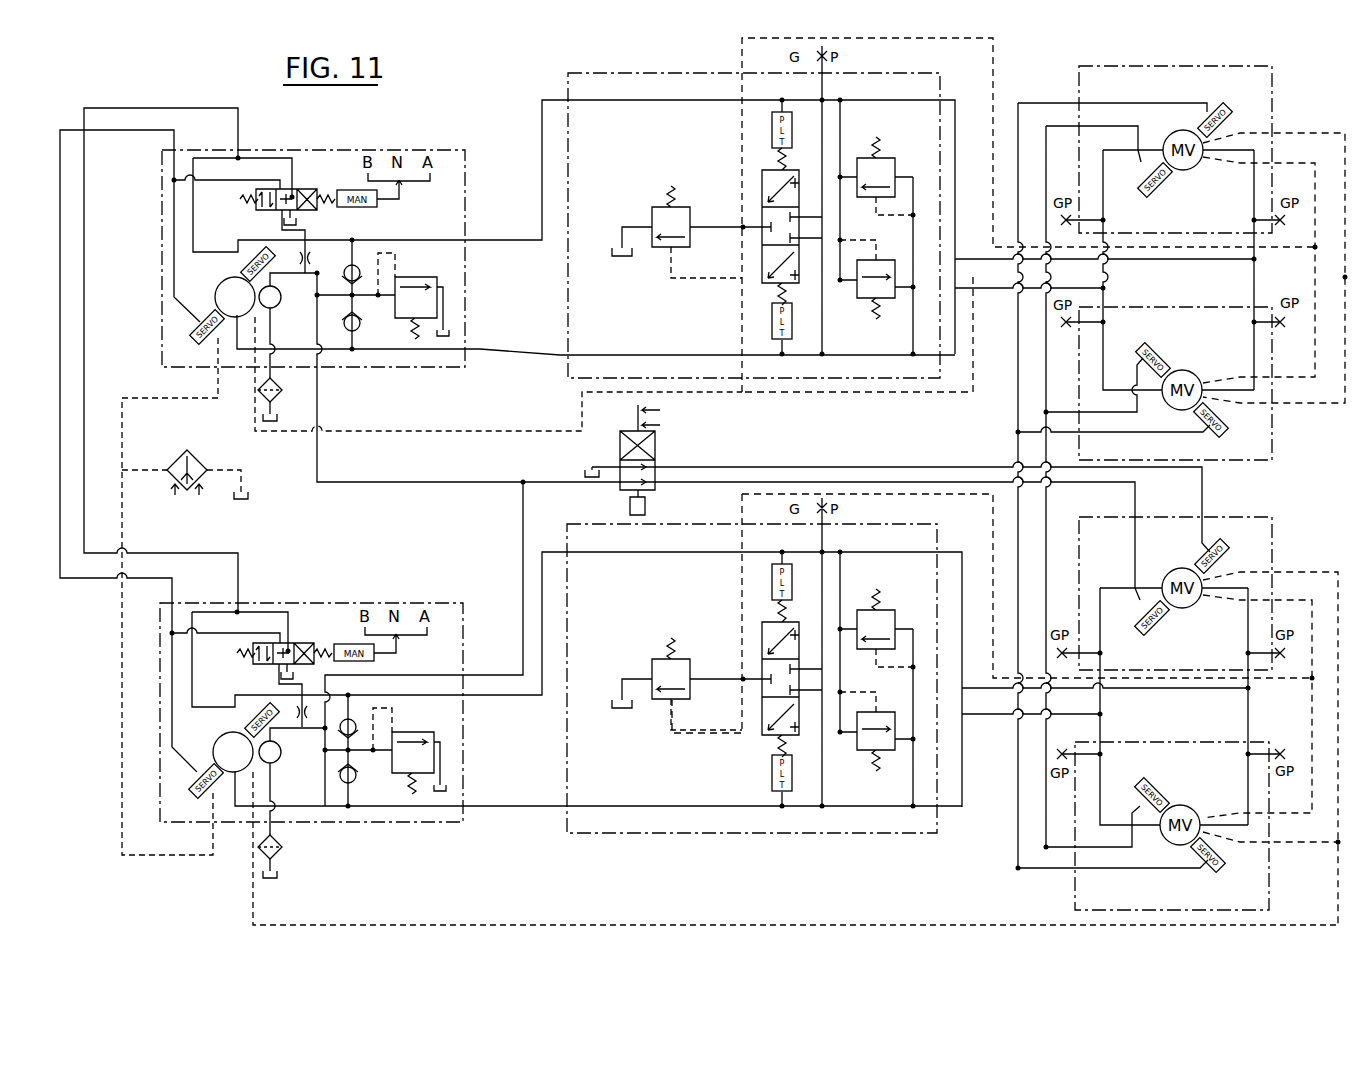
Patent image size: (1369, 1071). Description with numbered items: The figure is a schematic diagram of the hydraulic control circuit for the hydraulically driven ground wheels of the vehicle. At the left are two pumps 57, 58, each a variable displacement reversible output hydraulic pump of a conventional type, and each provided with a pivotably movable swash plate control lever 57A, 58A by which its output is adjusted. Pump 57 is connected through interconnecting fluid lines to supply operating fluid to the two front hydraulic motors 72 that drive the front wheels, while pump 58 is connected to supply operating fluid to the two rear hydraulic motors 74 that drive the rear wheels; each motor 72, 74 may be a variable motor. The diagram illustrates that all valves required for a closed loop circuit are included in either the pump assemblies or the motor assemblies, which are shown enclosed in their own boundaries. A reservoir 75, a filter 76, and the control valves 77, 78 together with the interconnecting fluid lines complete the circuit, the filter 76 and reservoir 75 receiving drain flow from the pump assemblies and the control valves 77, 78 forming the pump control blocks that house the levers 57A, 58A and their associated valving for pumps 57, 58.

The control valve 78 is at (410, 150).
The swash plate control lever 58A is at (377, 208).
The hydraulic pump 58 is at (219, 285).
The control valve 77 is at (388, 603).
The swash plate control lever 57A is at (374, 659).
The hydraulic pump 57 is at (216, 742).
The filter 76 is at (292, 841).
The reservoir 75 is at (299, 870).
The rear hydraulic motor 74 is at (1195, 354).
The front hydraulic motor 72 is at (1200, 795).